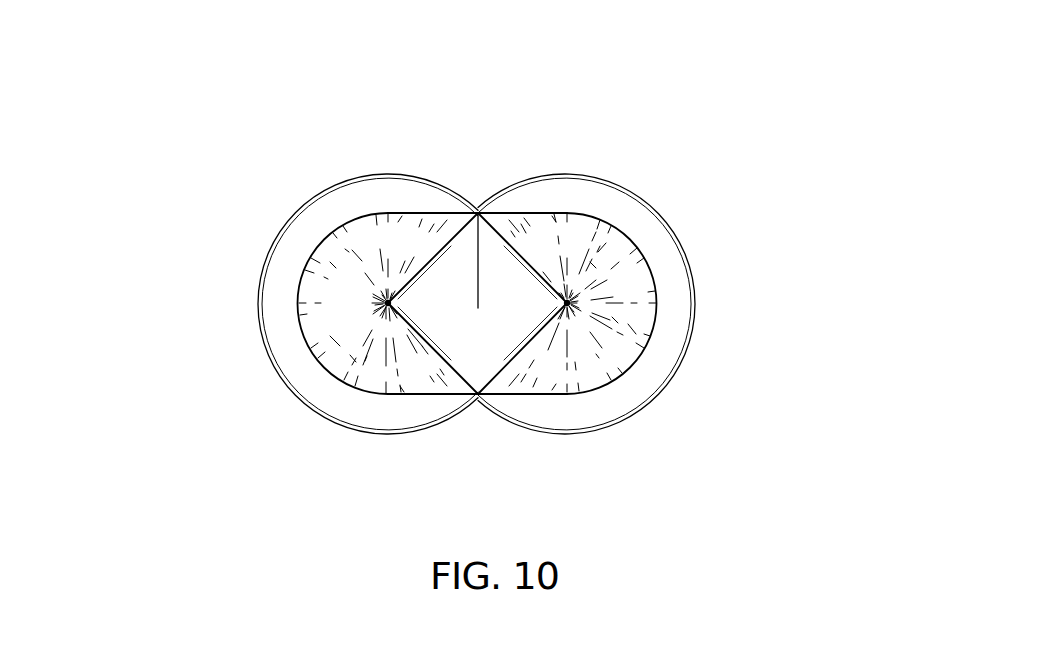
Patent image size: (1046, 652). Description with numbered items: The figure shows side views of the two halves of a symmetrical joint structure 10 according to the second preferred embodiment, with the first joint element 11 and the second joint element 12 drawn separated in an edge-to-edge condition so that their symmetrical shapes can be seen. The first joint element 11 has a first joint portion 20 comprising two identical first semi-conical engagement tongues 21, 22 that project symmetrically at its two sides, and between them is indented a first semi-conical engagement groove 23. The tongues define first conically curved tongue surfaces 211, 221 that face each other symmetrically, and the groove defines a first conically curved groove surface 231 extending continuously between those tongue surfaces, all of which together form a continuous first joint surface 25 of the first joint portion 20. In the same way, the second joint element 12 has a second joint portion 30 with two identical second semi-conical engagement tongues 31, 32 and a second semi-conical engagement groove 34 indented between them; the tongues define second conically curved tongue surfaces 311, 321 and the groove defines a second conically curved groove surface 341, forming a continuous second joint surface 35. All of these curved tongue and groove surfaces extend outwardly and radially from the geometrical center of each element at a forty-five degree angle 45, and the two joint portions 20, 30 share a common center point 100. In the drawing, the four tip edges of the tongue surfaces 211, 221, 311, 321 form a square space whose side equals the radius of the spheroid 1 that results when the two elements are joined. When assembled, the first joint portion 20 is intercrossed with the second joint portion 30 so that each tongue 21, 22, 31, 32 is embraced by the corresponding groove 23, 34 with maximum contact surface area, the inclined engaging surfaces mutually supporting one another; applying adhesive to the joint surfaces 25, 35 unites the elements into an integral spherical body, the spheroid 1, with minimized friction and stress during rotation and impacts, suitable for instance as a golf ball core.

The spheroid 1 is at (668, 478).
The symmetrical joint structure 10 is at (610, 96).
The first joint element 11 is at (258, 284).
The second joint element 12 is at (683, 365).
The first joint portion 20 is at (447, 178).
The first semi-conical engagement tongue 21 is at (418, 367).
The first conically curved tongue surface 211 is at (420, 335).
The first semi-conical engagement tongue 22 is at (428, 238).
The first conically curved tongue surface 221 is at (430, 266).
The first semi-conical engagement groove 23 is at (323, 302).
The first conically curved groove surface 231 is at (323, 330).
The first joint surface 25 is at (347, 255).
The second joint portion 30 is at (543, 168).
The second semi-conical engagement tongue 31 is at (572, 386).
The second conically curved tongue surface 311 is at (556, 345).
The second semi-conical engagement tongue 32 is at (534, 242).
The second conically curved tongue surface 321 is at (530, 262).
The second semi-conical engagement groove 34 is at (609, 292).
The second conically curved groove surface 341 is at (640, 330).
The second joint surface 35 is at (612, 258).
The 45° angle 45 is at (478, 287).
The center point 100 is at (564, 304).